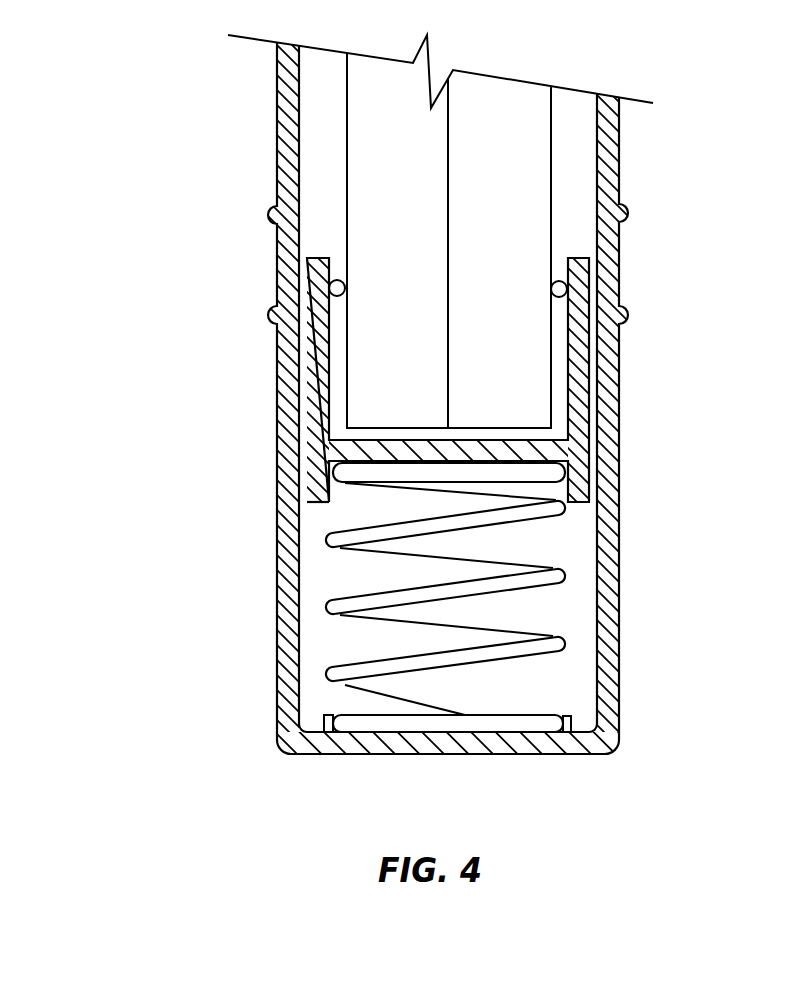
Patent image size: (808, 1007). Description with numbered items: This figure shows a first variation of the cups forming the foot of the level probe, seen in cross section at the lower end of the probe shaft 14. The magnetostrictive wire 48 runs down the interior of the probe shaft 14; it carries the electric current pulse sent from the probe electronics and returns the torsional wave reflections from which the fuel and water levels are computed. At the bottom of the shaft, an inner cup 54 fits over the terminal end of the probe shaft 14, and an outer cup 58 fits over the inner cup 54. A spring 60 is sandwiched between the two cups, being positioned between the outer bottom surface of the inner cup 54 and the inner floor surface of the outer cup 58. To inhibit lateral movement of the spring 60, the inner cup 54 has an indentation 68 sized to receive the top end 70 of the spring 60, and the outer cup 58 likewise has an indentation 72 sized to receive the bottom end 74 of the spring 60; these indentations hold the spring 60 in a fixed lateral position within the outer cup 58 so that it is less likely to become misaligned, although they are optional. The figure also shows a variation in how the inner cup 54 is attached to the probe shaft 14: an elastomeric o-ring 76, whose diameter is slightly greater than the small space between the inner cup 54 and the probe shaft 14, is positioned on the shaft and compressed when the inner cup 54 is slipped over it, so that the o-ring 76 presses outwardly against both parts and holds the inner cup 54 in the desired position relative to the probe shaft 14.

The probe shaft 14 is at (551, 152).
The magnetostrictive wire 48 is at (450, 153).
The inner cup 54 is at (590, 380).
The outer cup 58 is at (619, 515).
The spring 60 is at (385, 662).
The indentation 68 is at (345, 503).
The top end of the spring 70 is at (370, 487).
The indentation 72 is at (573, 726).
The bottom end of the spring 74 is at (510, 707).
The elastomeric o-ring 76 is at (563, 285).